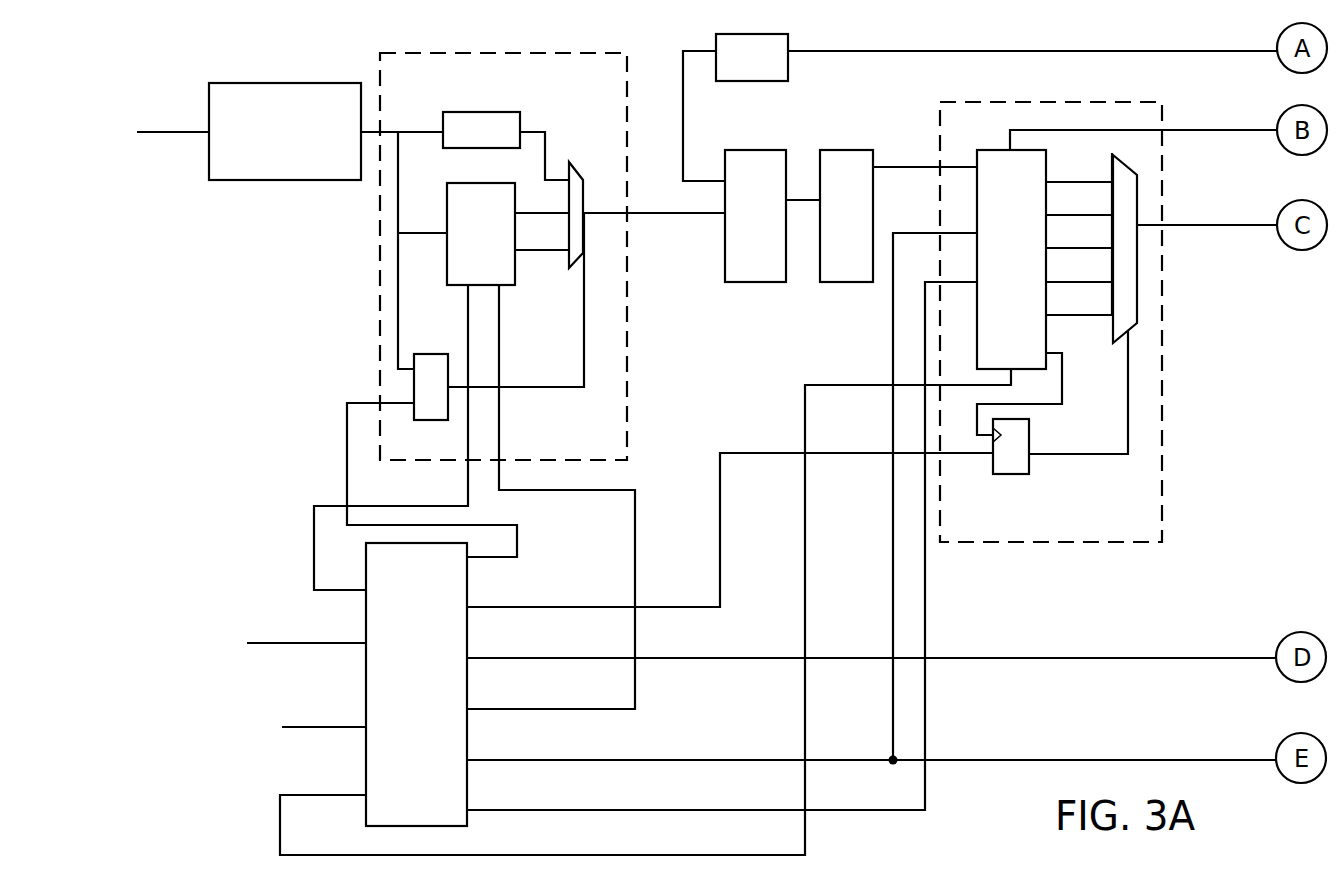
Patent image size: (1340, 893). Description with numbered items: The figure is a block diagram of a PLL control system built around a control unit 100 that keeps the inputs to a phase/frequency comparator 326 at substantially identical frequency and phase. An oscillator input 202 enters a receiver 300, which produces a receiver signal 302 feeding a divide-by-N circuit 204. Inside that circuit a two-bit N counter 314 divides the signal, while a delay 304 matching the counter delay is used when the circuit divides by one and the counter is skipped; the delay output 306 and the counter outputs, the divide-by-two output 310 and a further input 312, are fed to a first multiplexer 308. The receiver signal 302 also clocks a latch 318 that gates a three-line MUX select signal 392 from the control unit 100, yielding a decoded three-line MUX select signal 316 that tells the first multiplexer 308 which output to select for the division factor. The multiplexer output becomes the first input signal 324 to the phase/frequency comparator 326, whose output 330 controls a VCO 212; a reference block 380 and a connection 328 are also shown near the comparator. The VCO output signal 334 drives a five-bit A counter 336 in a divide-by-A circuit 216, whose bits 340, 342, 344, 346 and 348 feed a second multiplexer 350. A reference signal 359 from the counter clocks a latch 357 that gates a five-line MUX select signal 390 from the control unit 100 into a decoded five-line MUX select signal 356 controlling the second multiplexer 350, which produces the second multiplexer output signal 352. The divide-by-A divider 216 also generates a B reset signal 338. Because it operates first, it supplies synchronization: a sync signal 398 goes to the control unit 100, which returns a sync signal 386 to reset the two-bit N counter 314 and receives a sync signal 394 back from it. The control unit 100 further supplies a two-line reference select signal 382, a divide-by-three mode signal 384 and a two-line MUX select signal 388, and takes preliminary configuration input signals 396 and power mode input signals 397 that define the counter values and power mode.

The control unit 100 is at (418, 684).
The oscillator input 202 is at (168, 131).
The divide-by-N circuit 204 is at (379, 68).
The VCO 212 is at (846, 216).
The divide-by-A circuit 216 is at (1028, 95).
The receiver 300 is at (293, 96).
The receiver signal 302 is at (418, 131).
The delay 304 is at (481, 130).
The delayed signal line 306 is at (547, 164).
The first multiplexer 308 is at (585, 190).
The divide-by-two output 310 is at (530, 213).
The input signal to multiplexer 312 is at (530, 250).
The two-bit N counter 314 is at (481, 234).
The decoded three-line MUX select signal 316 is at (516, 300).
The latch 318 is at (438, 371).
The first input signal 324 is at (707, 218).
The phase/frequency comparator 326 is at (755, 216).
The control line 328 is at (685, 153).
The output from phase/frequency comparator 330 is at (803, 180).
The VCO output signal 334 is at (925, 151).
The five-bit A counter 336 is at (1011, 259).
The B reset signal 338 is at (1143, 126).
The A counter bit 340 is at (1079, 167).
The A counter bit 342 is at (1079, 198).
The divide-by-eight output 344 is at (1079, 231).
The divide-by-sixteen output 346 is at (1079, 265).
The divide-by-thirty-two output 348 is at (1079, 298).
The second multiplexer 350 is at (1148, 206).
The second multiplexer output signal 352 is at (1207, 242).
The decoded five-line MUX select signal 356 is at (1078, 392).
The latch 357 is at (1020, 475).
The reference signal 359 is at (1044, 394).
The register 380 is at (996, 57).
The two-line reference select signal 382 is at (560, 812).
The divide-by-three mode signal 384 is at (555, 762).
The sync signal / N reset signal 386 is at (555, 713).
The two-line MUX select signal 388 is at (555, 661).
The five-line MUX select signal 390 is at (555, 609).
The three-line MUX select signal 392 is at (478, 560).
The sync signal 394 is at (345, 597).
The preliminary configuration input signals 396 is at (283, 645).
The power mode input signals 397 is at (300, 726).
The sync signal 398 is at (303, 794).